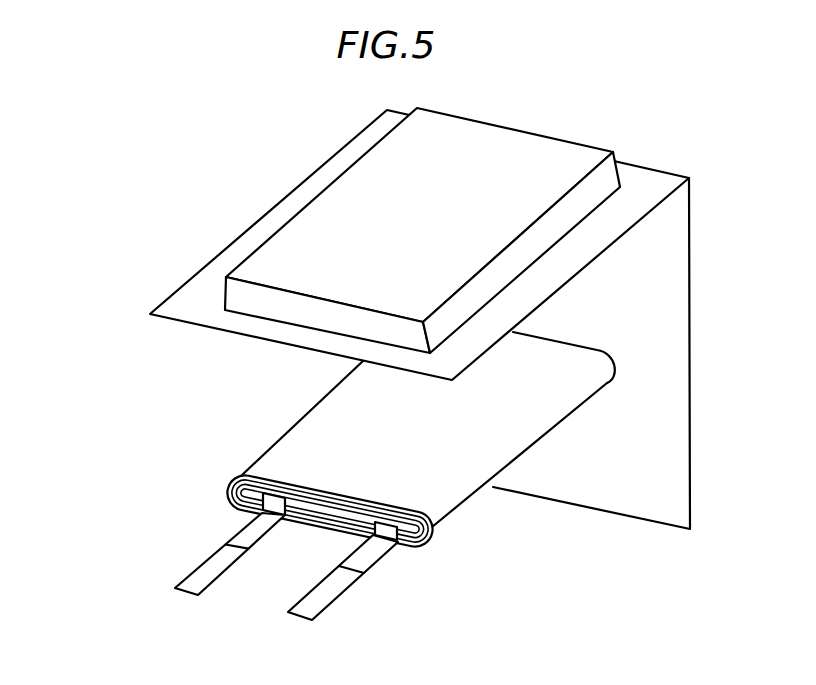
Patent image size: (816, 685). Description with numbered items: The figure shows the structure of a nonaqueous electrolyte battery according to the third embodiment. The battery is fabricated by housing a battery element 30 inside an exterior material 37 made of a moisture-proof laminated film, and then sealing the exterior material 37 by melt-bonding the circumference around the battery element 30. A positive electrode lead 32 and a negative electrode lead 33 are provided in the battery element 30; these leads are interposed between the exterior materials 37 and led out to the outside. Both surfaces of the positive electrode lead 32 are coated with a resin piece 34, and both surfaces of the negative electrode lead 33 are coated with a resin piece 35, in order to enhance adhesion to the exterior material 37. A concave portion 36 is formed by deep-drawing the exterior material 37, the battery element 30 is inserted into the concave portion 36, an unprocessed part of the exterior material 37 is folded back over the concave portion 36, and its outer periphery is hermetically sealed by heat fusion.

The battery element 30 is at (253, 452).
The positive electrode lead 32 is at (323, 612).
The negative electrode lead 33 is at (183, 578).
The resin piece 34 is at (383, 560).
The resin piece 35 is at (240, 525).
The concave portion 36 is at (382, 160).
The exterior material 37 is at (256, 222).